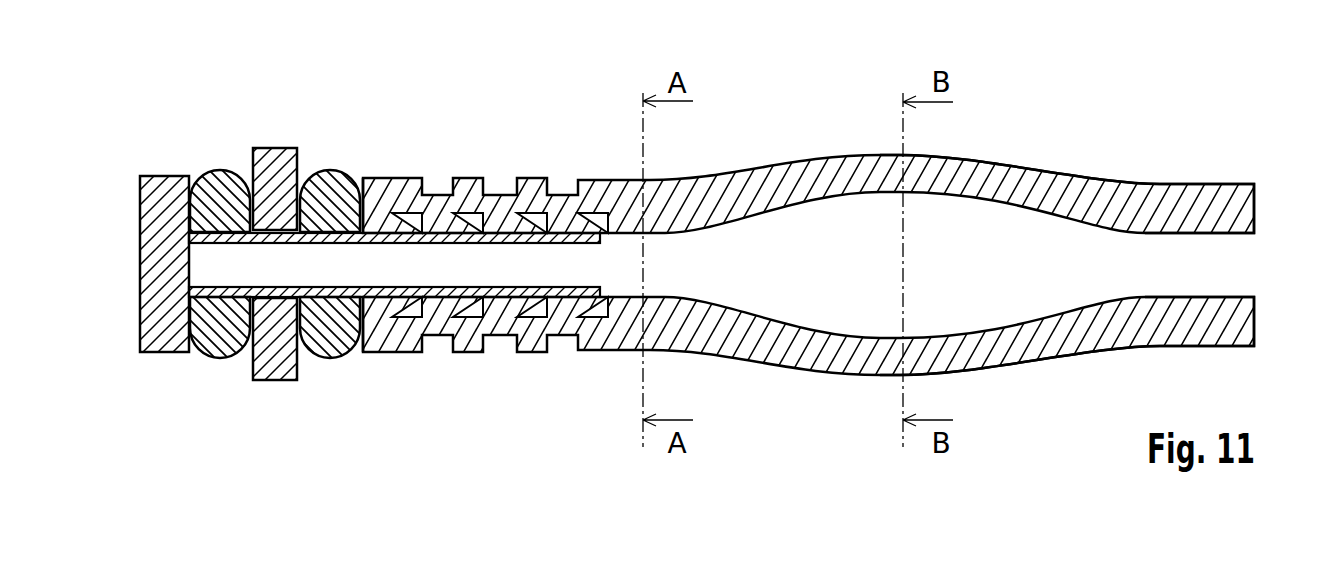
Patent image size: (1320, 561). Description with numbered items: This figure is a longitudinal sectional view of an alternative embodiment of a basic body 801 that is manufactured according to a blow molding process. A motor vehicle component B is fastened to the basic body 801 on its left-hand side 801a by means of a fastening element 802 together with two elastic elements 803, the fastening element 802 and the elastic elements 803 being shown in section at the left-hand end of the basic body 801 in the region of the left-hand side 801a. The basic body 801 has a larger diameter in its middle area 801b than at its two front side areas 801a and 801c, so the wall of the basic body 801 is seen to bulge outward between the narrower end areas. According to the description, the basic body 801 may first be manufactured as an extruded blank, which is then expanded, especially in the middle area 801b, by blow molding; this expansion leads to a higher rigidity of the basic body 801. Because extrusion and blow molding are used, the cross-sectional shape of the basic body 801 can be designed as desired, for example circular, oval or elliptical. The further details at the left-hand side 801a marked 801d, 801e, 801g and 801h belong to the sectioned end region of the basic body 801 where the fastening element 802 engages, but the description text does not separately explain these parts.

The basic body 801 is at (837, 150).
The left-hand side 801a is at (377, 180).
The middle area 801b is at (928, 153).
The front side area 801c is at (1257, 200).
The inner projection 801d is at (597, 217).
The inner ridge 801e is at (502, 215).
The inner ridge 801g is at (495, 340).
The inner projection 801h is at (535, 342).
The fastening element 802 is at (180, 180).
The elastic elements 803 is at (230, 168).
The motor vehicle component B is at (275, 153).